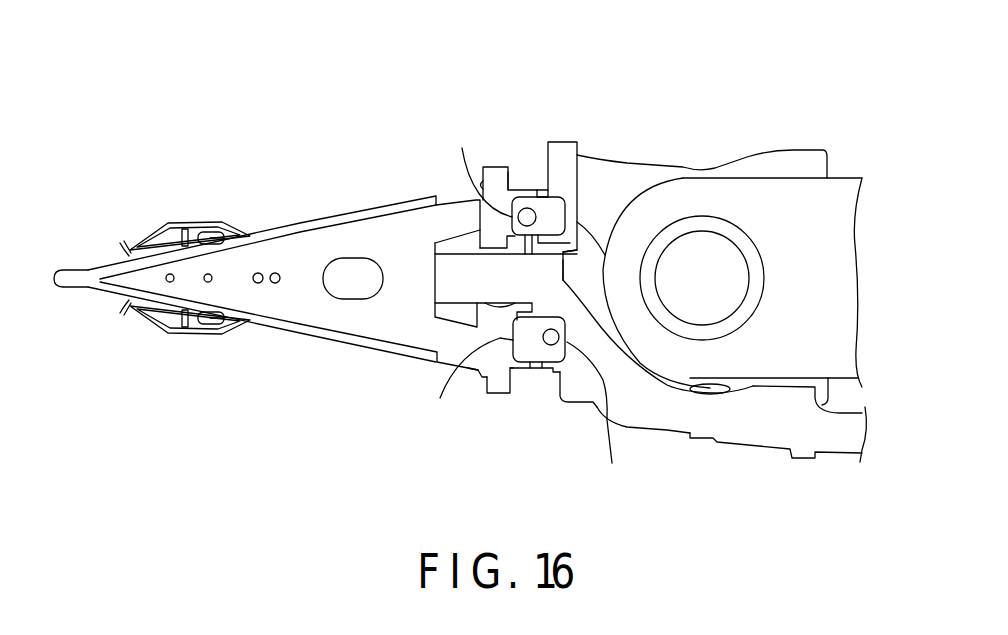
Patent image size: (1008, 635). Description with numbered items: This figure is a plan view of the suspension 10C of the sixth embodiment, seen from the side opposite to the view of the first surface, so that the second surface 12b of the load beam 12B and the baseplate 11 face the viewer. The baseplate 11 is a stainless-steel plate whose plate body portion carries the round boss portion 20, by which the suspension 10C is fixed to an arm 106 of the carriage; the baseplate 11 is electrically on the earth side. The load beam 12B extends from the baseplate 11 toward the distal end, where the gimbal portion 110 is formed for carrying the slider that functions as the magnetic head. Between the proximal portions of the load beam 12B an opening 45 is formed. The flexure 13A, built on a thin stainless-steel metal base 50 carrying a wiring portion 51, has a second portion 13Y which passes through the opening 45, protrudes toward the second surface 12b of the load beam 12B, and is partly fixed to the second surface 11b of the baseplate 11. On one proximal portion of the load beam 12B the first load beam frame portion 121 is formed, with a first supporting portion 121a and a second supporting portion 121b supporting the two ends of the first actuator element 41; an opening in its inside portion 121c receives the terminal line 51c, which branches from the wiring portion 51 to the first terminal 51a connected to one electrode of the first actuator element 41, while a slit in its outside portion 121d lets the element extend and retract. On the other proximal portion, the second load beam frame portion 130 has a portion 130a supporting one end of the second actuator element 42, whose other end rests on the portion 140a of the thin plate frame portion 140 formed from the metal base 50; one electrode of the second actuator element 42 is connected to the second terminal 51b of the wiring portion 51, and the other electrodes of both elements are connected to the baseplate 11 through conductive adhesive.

The suspension 10C is at (344, 94).
The gimbal portion 110 is at (184, 196).
The load beam 12B is at (317, 219).
The second surface 12b is at (288, 323).
The opening 45 is at (476, 310).
The wiring portion 51 is at (458, 265).
The first terminal 51a is at (524, 206).
The second terminal 51b is at (548, 338).
The terminal line 51c is at (512, 233).
The first actuator element 41 is at (548, 212).
The second actuator element 42 is at (523, 340).
The first load beam frame portion 121 is at (584, 182).
The first supporting portion 121a is at (577, 221).
The second supporting portion 121b is at (484, 183).
The inside portion 121c is at (608, 255).
The outside portion 121d is at (534, 188).
The baseplate 11 is at (807, 150).
The second surface 11b is at (747, 166).
The boss portion 20 is at (747, 233).
The arm 106 is at (823, 215).
The second load beam frame portion 130 is at (472, 395).
The portion 130a is at (477, 376).
The thin plate frame portion 140 is at (540, 382).
The portion 140a is at (601, 418).
The flexure 13A is at (586, 424).
The second portion 13Y is at (663, 411).
The metal base 50 is at (750, 445).